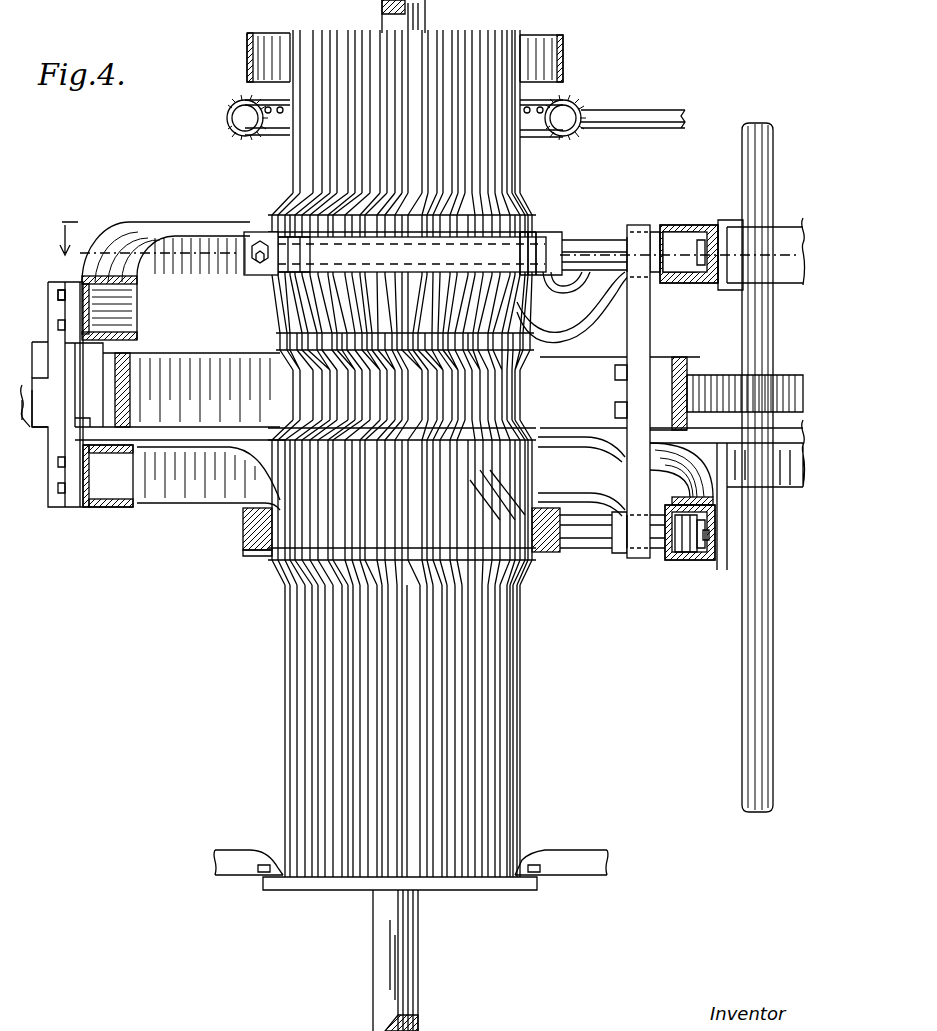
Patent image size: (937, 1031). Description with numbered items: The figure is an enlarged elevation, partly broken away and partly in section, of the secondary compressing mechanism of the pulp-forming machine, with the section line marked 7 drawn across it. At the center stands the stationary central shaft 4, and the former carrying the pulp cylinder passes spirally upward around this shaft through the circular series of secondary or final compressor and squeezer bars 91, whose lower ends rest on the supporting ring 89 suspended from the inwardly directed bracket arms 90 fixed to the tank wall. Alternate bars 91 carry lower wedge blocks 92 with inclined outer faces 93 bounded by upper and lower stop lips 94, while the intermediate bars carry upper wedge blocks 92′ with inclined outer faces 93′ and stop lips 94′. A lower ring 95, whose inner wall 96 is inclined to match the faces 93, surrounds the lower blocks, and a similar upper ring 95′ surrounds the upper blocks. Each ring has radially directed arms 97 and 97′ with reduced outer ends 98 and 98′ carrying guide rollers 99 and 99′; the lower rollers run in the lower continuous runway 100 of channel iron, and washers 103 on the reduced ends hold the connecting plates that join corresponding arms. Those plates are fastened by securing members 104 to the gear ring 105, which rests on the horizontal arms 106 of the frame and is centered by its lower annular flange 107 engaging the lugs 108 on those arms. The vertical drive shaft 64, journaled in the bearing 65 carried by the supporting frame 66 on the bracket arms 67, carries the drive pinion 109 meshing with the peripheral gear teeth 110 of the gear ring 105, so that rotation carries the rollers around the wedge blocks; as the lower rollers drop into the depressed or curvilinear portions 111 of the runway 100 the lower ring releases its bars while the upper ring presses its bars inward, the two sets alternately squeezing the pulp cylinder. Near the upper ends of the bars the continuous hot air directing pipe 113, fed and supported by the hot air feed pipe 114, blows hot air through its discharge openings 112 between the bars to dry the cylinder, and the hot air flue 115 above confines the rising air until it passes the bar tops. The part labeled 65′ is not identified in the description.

The stationary central shaft 4 is at (385, 950).
The section line 7 is at (415, 244).
The vertical drive shaft 64 is at (745, 680).
The bearing 65 is at (758, 462).
The bracket 65′ is at (783, 215).
The supporting frame 66 is at (57, 322).
The bracket arms 67 is at (40, 420).
The supporting ring 89 is at (305, 888).
The inwardly directed bracket arms 90 is at (572, 862).
The secondary or final compressor and squeezer bars 91 is at (345, 745).
The lower wedge blocks 92 is at (465, 490).
The upper wedge blocks 92′ is at (300, 290).
The inclined outer faces 93 is at (545, 525).
The inclined outer faces 93′ is at (335, 308).
The upper and lower stop lips 94 is at (300, 428).
The stop lips 94′ is at (300, 205).
The lower ring 95 is at (243, 530).
The upper ring 95′ is at (553, 235).
The inner wall 96 is at (243, 553).
The radially directed arms 97 is at (605, 555).
The radially directed arms 97′ is at (578, 252).
The reduced outer ends 98 is at (700, 548).
The reduced outer ends 98′ is at (703, 238).
The guide rollers 99 is at (683, 550).
The guide rollers 99′ is at (248, 240).
The lower continuous runway 100 is at (100, 490).
The washers 103 is at (652, 560).
The securing members 104 is at (615, 410).
The gear ring 105 is at (658, 362).
The horizontal arms 106 is at (130, 435).
The lower outwardly directed annular flange 107 is at (78, 440).
The lugs 108 is at (65, 468).
The drive pinion 109 is at (712, 375).
The peripheral gear teeth 110 is at (684, 352).
The depressed or curvilinear portions 111 is at (706, 540).
The discharge openings 112 is at (542, 108).
The continuous hot air directing pipe 113 is at (238, 108).
The hot air feed pipe 114 is at (640, 118).
The hot air flue 115 is at (565, 45).